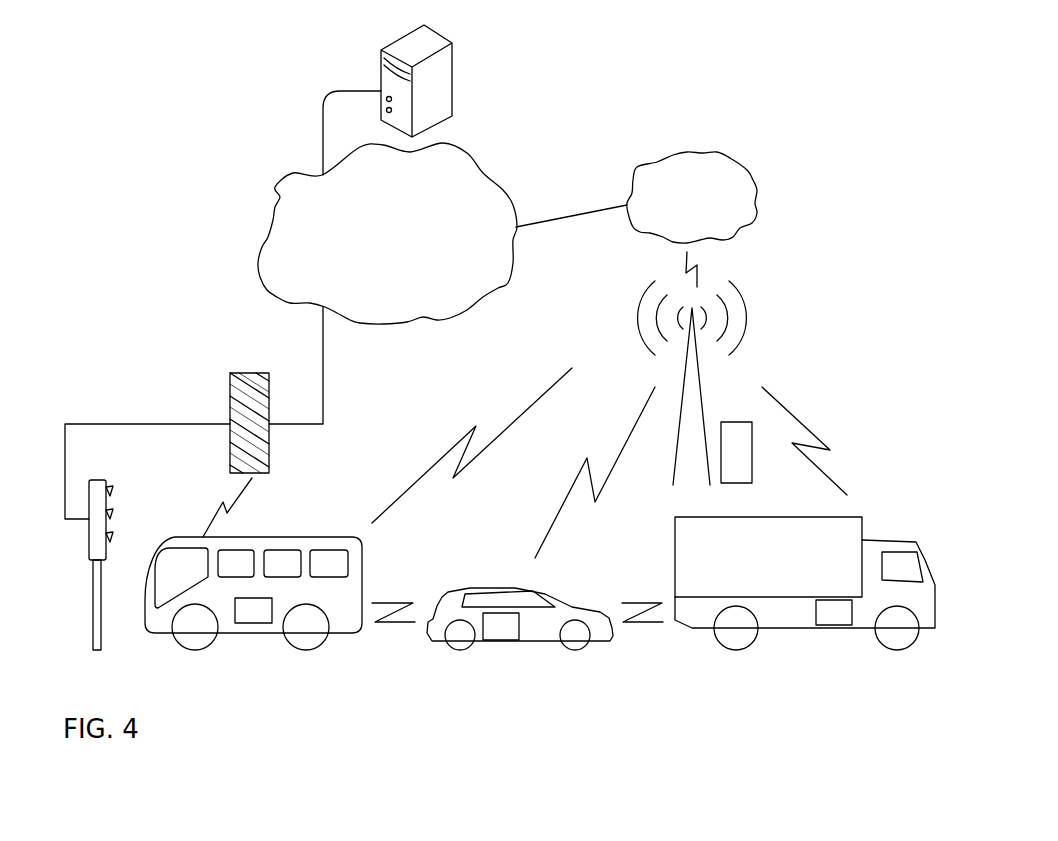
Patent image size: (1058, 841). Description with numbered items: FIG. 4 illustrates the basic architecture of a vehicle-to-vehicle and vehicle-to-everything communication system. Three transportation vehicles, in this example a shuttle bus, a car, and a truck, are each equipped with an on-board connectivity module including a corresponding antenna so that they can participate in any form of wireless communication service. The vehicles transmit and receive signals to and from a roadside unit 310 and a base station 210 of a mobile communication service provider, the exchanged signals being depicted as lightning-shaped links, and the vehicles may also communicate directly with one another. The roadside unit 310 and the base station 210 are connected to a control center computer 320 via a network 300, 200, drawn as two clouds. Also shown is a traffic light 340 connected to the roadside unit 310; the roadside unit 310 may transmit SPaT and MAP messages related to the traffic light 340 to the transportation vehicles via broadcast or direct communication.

The network 200 is at (713, 167).
The base station 210 is at (702, 406).
The network 300 is at (458, 187).
The roadside unit 310 is at (246, 374).
The control center computer 320 is at (452, 68).
The traffic light 340 is at (103, 502).